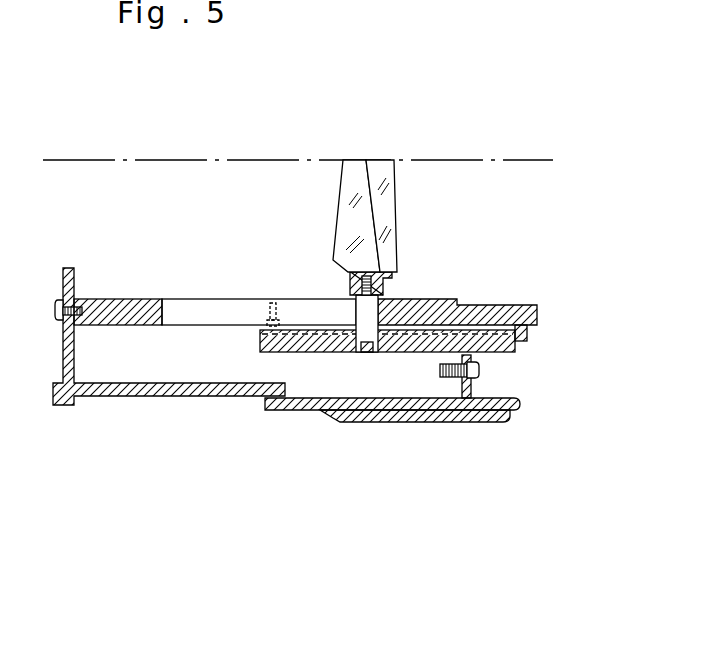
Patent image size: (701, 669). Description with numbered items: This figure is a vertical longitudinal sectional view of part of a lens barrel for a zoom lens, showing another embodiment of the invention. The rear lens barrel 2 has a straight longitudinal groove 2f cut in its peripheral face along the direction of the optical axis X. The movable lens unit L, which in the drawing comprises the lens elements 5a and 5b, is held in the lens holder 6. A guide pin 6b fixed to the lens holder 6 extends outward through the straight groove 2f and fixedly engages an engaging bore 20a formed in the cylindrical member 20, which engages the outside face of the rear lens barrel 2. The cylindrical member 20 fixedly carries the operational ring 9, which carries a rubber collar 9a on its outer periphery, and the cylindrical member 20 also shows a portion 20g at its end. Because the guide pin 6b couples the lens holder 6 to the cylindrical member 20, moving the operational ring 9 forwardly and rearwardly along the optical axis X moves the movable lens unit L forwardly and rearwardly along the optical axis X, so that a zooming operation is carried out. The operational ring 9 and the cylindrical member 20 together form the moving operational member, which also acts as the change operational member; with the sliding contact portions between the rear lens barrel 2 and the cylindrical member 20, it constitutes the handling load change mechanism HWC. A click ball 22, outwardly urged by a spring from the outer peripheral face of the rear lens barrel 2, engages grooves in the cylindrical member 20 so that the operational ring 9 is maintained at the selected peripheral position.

The rear lens barrel 2 is at (497, 305).
The straight longitudinal groove 2f is at (190, 303).
The lens element 5a is at (384, 167).
The lens element 5b is at (354, 167).
The movable lens unit L is at (398, 96).
The lens holder 6 is at (342, 272).
The guide pin 6b is at (362, 345).
The operational ring 9 is at (287, 411).
The rubber collar 9a is at (443, 420).
The cylindrical member 20 is at (313, 343).
The engaging bore 20a is at (370, 355).
The guide lip of slide plate 20g is at (507, 357).
The click ball 22 is at (271, 301).
The optical axis X is at (310, 163).
The handling load change mechanism HWC is at (248, 328).